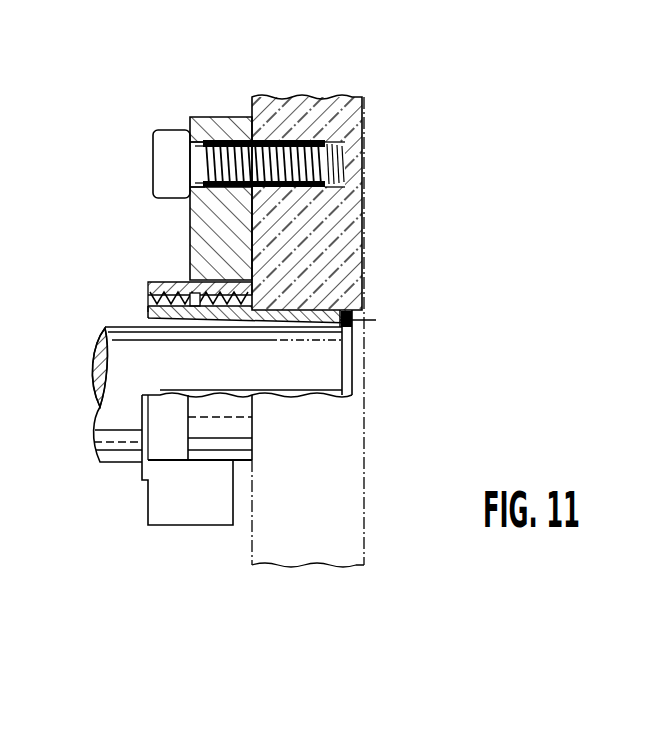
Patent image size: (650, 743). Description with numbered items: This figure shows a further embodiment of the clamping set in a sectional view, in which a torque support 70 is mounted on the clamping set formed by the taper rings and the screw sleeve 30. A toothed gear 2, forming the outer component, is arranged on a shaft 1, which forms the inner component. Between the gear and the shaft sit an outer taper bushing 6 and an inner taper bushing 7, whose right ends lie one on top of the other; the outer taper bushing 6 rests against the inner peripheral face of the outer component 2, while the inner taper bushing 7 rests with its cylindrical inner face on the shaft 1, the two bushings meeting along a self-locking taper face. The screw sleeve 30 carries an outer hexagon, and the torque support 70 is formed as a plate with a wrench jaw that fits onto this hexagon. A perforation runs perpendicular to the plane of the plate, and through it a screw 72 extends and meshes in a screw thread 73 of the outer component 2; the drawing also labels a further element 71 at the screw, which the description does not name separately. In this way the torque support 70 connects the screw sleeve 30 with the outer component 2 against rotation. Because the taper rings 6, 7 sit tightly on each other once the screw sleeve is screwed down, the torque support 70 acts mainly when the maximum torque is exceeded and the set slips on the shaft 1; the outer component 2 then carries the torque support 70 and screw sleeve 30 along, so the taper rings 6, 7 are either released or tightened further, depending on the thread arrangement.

The shaft 1 is at (102, 422).
The toothed gear 2 is at (355, 236).
The outer taper bushing 6 is at (352, 322).
The inner taper bushing 7 is at (149, 316).
The screw sleeve 30 is at (140, 500).
The torque support 70 is at (182, 256).
The bolt 71 is at (196, 145).
The screw 72 is at (153, 166).
The screw thread 73 is at (348, 156).